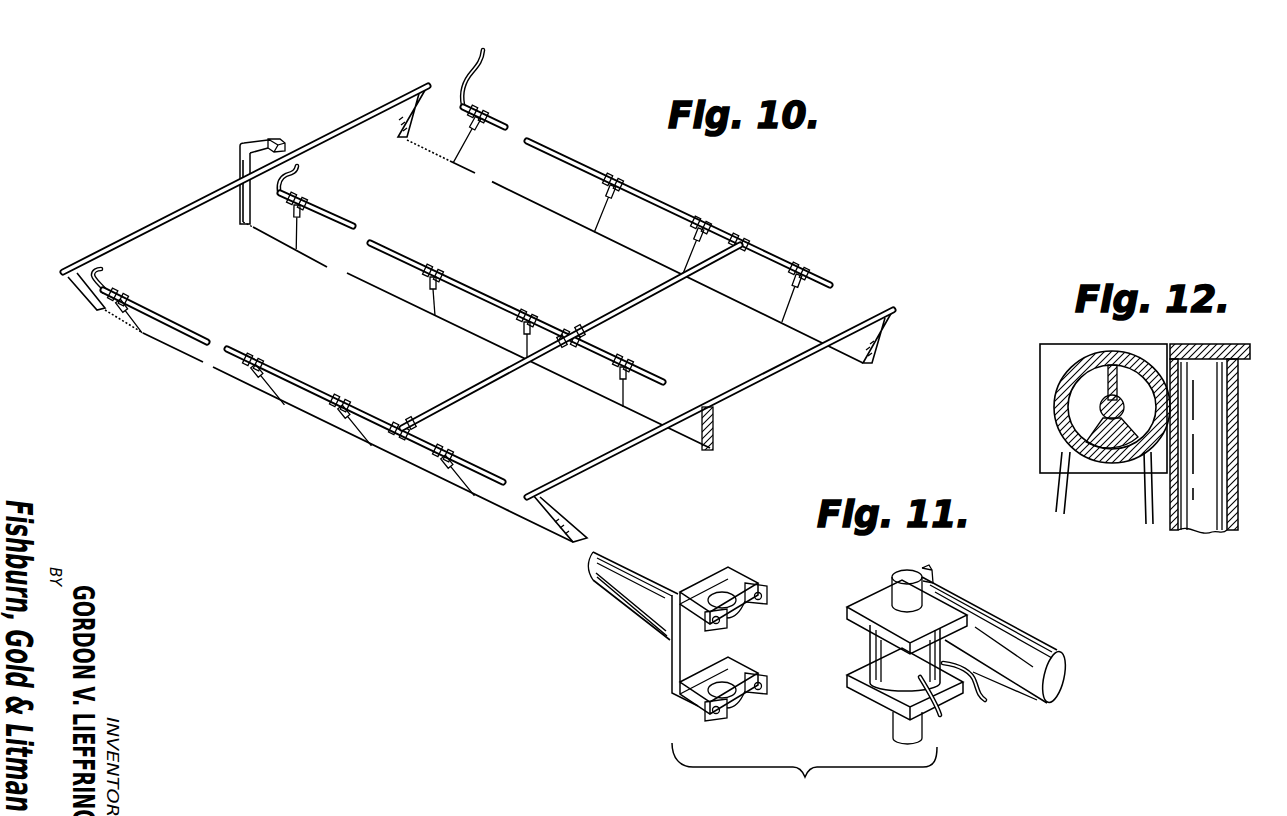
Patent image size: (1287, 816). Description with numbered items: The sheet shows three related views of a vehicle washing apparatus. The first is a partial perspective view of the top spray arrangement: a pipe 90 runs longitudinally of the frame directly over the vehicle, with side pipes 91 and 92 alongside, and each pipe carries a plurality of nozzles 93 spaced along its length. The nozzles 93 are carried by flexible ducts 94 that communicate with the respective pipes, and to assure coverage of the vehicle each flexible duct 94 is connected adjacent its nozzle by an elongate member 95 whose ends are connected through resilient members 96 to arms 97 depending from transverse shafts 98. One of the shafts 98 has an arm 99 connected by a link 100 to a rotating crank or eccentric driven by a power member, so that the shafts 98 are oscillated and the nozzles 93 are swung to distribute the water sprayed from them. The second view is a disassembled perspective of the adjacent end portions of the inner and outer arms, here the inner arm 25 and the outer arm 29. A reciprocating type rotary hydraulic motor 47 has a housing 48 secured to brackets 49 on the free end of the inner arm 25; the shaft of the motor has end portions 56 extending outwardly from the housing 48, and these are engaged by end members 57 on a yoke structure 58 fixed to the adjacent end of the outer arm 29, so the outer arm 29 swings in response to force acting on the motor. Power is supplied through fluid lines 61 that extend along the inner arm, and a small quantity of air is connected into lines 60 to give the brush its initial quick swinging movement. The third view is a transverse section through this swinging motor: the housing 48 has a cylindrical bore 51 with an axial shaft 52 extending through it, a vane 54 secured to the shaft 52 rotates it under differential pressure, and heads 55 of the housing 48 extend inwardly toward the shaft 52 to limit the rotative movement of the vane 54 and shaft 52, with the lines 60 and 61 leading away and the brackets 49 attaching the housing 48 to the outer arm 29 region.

In FIG. 11, the inner arm 25 is at (613, 604).
In FIG. 12, the outer arm 29 is at (1242, 472).
In FIG. 11, the outer arm 29 is at (1028, 638).
In FIG. 11, the rotary hydraulic motor 47 is at (897, 678).
In FIG. 12, the housing 48 is at (1075, 440).
In FIG. 11, the housing 48 is at (868, 652).
In FIG. 12, the brackets 49 is at (1164, 518).
In FIG. 12, the cylindrical bore 51 is at (1078, 390).
In FIG. 12, the axial shaft 52 is at (1100, 410).
In FIG. 12, the vane 54 is at (1104, 366).
In FIG. 12, the heads 55 is at (1113, 450).
In FIG. 11, the end portions 56 is at (903, 568).
In FIG. 11, the end members 57 is at (767, 593).
In FIG. 11, the yoke structure 58 is at (671, 655).
In FIG. 12, the lines 60 is at (1058, 513).
In FIG. 11, the lines 60 is at (940, 715).
In FIG. 12, the fluid lines 61 is at (1148, 527).
In FIG. 11, the fluid lines 61 is at (974, 687).
In FIG. 10, the pipe 90 is at (470, 290).
In FIG. 10, the side pipe 91 is at (654, 200).
In FIG. 10, the side pipe 92 is at (300, 378).
In FIG. 10, the nozzles 93 is at (435, 322).
In FIG. 10, the flexible ducts 94 is at (430, 307).
In FIG. 10, the elongate members 95 is at (352, 266).
In FIG. 10, the resilient members 96 is at (407, 141).
In FIG. 10, the arms 97 is at (240, 211).
In FIG. 10, the transverse shafts 98 is at (154, 230).
In FIG. 10, the arm 99 is at (249, 143).
In FIG. 10, the link 100 is at (283, 147).